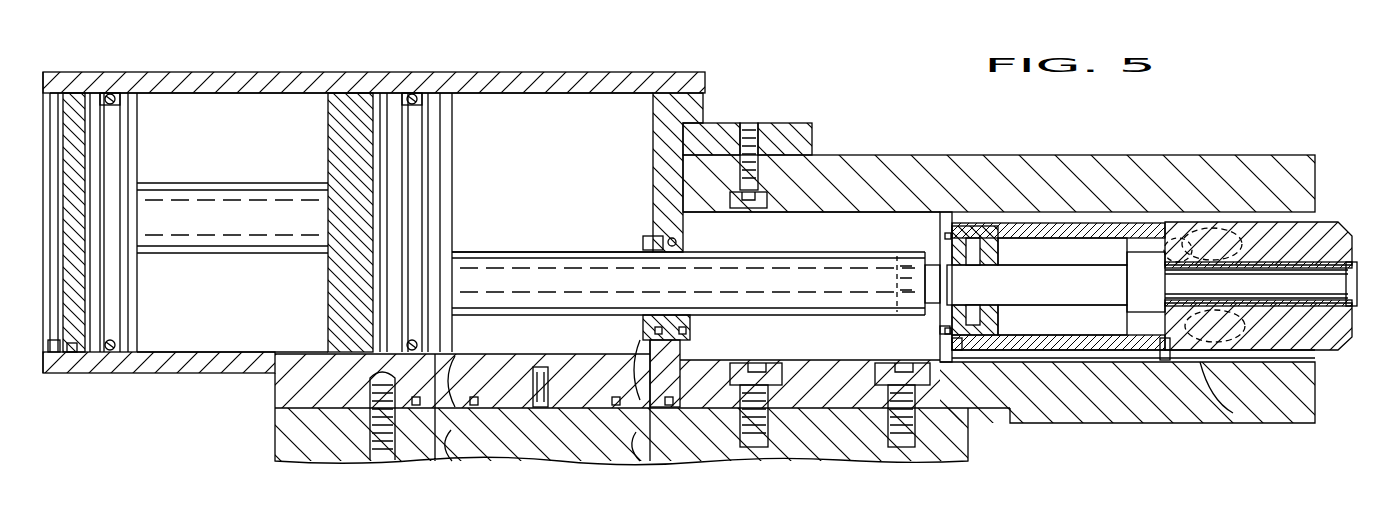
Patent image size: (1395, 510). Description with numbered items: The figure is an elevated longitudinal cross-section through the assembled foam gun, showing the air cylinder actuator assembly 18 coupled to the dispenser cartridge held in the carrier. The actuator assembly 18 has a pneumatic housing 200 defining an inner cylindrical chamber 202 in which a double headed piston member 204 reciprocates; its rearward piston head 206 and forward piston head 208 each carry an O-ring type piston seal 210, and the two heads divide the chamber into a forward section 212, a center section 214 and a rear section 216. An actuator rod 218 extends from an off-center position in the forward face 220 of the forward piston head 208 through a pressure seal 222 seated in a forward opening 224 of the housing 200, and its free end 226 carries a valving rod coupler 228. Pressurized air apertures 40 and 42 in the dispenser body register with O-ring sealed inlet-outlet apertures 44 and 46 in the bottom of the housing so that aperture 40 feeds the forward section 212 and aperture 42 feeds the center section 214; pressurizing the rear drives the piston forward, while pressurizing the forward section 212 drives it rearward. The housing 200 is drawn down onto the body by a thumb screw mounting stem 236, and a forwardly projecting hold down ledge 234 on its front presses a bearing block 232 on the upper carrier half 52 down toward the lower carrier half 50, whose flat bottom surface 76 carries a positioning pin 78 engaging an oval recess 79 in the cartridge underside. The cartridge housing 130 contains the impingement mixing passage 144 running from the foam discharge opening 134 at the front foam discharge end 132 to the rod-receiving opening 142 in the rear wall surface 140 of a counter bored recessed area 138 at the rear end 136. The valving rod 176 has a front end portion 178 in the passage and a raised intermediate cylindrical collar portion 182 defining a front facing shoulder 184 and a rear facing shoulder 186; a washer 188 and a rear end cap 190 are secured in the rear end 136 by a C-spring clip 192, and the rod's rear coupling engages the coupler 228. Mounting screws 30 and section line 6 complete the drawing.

The air cylinder actuator assembly 18 is at (370, 62).
The pneumatic housing 200 is at (548, 72).
The inner cylindrical chamber 202 is at (236, 95).
The double headed piston member 204 is at (195, 234).
The rearward piston head 206 is at (128, 128).
The forward piston head 208 is at (437, 107).
The O-ring type piston seal 210 is at (112, 95).
The forward section 212 is at (545, 197).
The center section 214 is at (218, 329).
The rear section 216 is at (85, 358).
The actuator rod 218 is at (535, 254).
The forward face 220 is at (447, 115).
The pressure seal 222 is at (643, 243).
The forward opening 224 is at (667, 233).
The free end 226 is at (907, 253).
The valving rod coupler 228 is at (898, 260).
The bearing block 232 is at (793, 135).
The hold down ledge 234 is at (705, 123).
The thumb screw mounting stem 236 is at (378, 458).
The upper carrier half 52 is at (1043, 172).
The rear end 136 is at (963, 227).
The washer 188 is at (992, 233).
The counter bored recessed area 138 is at (1043, 247).
The front end portion 178 is at (1045, 285).
The raised intermediate cylindrical collar portion 182 is at (1130, 295).
The rear facing shoulder 186 is at (1130, 257).
The front facing shoulder 184 is at (1167, 250).
The cartridge housing 130 is at (1257, 227).
The impingement mixing passage 144 is at (1307, 267).
The front foam discharge end 132 is at (1343, 268).
The foam discharge opening 134 is at (1357, 268).
The flat bottom surface 76 is at (1323, 353).
The positioning pin 78 is at (1165, 364).
The oval recess 79 is at (1233, 413).
The lower carrier half 50 is at (1238, 420).
The valving rod 176 is at (1065, 332).
The rear wall surface 140 is at (1143, 332).
The rod-receiving opening 142 is at (1117, 332).
The rear end cap 190 is at (967, 343).
The C-spring clip 192 is at (947, 330).
The O-ring sealed inlet-outlet aperture 44 is at (455, 356).
The pressurized air aperture 40 is at (447, 460).
The O-ring sealed inlet-outlet aperture 46 is at (638, 355).
The pressurized air aperture 42 is at (632, 455).
The fastening screw 30 is at (760, 437).
The section line 6- 6 is at (1168, 212).